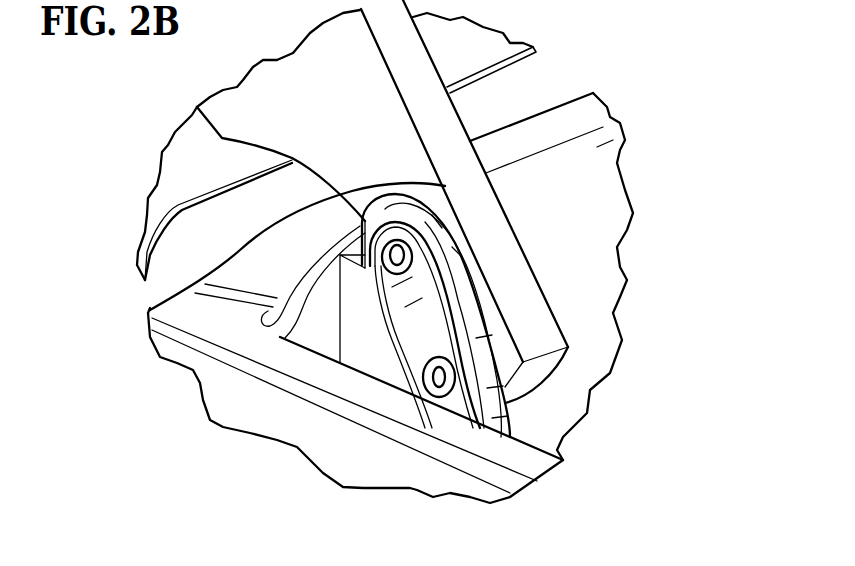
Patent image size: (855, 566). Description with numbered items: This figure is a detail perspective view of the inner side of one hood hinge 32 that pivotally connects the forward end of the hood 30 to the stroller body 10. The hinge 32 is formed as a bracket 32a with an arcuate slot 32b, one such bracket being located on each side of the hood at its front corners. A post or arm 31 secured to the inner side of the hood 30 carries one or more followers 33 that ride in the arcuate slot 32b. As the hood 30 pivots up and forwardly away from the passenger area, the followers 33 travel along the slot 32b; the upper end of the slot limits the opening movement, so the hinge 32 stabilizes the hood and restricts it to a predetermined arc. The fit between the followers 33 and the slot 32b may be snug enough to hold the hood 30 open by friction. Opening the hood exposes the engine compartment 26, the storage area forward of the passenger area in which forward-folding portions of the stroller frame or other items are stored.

The stroller body 10 is at (225, 385).
The engine compartment 26 is at (580, 272).
The hood 30 is at (490, 47).
The post or arm 31 is at (500, 237).
The hood hinge 32 is at (396, 344).
The bracket 32a is at (398, 322).
The arcuate slot 32b is at (447, 328).
The follower 33 is at (392, 263).